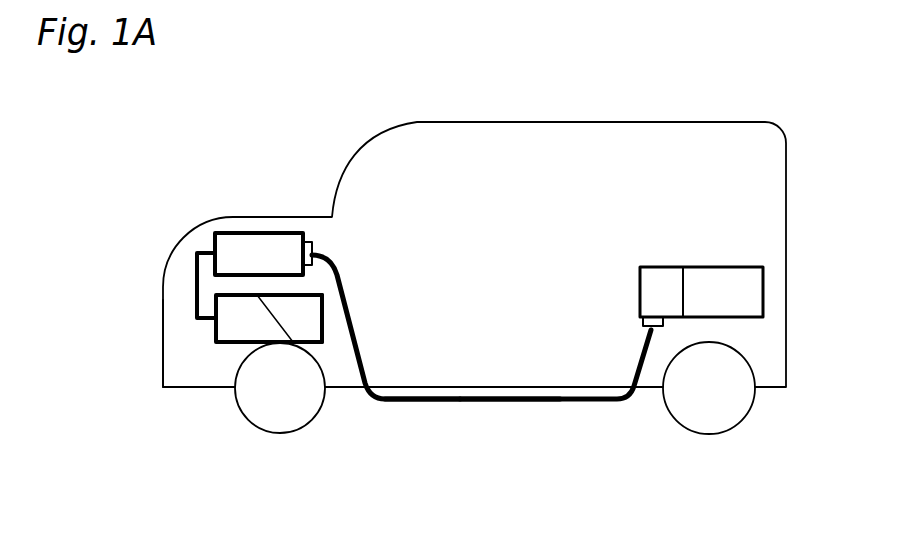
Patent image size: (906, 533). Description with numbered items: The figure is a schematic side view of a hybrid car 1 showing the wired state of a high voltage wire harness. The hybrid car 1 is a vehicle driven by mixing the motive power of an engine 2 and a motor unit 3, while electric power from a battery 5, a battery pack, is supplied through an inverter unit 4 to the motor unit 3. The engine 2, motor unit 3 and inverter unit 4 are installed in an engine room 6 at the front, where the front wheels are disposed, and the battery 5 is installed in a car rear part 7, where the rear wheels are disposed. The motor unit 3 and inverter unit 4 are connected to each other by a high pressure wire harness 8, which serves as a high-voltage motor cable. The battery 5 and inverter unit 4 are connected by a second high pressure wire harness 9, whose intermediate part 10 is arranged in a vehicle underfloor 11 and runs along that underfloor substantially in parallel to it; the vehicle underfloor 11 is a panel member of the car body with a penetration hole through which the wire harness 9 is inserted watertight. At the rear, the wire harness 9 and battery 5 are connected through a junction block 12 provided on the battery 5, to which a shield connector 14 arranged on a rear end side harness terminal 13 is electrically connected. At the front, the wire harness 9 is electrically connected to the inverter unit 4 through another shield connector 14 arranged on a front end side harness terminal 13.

The hybrid car 1 is at (527, 114).
The engine 2 is at (308, 325).
The motor unit 3 is at (238, 328).
The inverter unit 4 is at (247, 248).
The battery 5 is at (730, 280).
The engine room 6 is at (180, 360).
The car rear part 7 is at (765, 353).
The high pressure wire harness 8 is at (195, 292).
The high pressure wire harness 9 is at (405, 404).
The intermediate part 10 is at (513, 403).
The vehicle underfloor 11 is at (577, 392).
The junction block 12 is at (663, 280).
The harness terminal 13 is at (328, 257).
The shield connector 14 is at (315, 243).